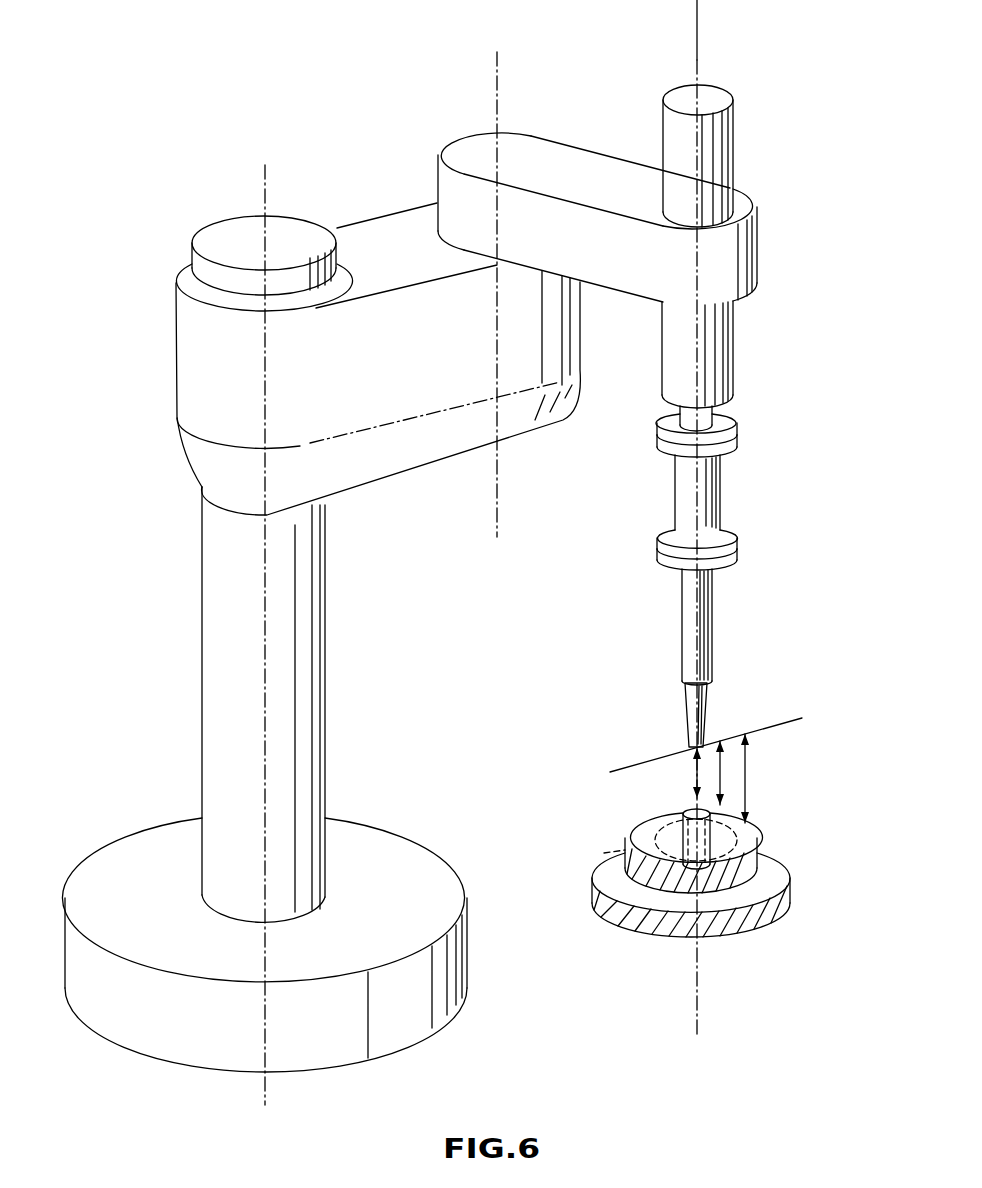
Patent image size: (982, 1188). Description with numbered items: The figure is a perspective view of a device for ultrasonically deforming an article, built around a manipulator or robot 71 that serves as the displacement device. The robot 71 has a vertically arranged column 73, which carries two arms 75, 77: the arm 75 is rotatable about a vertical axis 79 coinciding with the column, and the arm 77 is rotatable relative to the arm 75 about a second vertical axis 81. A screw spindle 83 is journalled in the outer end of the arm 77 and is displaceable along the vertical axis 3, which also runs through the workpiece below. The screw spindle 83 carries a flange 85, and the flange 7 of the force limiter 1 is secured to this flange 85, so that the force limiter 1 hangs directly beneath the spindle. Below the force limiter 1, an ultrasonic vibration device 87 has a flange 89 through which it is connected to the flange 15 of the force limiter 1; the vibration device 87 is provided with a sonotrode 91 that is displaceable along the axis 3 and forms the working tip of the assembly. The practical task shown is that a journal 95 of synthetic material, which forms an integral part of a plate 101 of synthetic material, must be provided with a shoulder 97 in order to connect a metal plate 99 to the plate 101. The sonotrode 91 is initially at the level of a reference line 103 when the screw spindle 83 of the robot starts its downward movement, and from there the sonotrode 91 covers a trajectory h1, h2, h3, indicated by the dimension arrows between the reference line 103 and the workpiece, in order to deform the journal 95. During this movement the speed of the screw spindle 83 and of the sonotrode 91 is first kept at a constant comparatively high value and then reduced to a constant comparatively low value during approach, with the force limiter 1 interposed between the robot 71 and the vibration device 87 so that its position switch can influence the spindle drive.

The force limiter 1 is at (685, 492).
The vertical axis 3 is at (697, 25).
The flange 7 is at (730, 457).
The flange 15 is at (734, 535).
The robot 71 is at (172, 323).
The column 73 is at (228, 603).
The arm 75 is at (433, 388).
The arm 77 is at (600, 177).
The vertical axis 79 is at (265, 713).
The vertical axis 81 is at (497, 88).
The screw spindle 83 is at (712, 413).
The flange 85 is at (735, 432).
The ultrasonic vibration device 87 is at (678, 610).
The flange 89 is at (726, 566).
The sonotrode 91 is at (688, 712).
The journal 95 is at (683, 813).
The shoulder 97 is at (604, 853).
The metal plate 99 is at (757, 838).
The plate 101 is at (772, 878).
The reference line 103 is at (782, 718).
The trajectory section h1 is at (693, 779).
The trajectory section h2 is at (722, 760).
The trajectory section h3 is at (746, 778).